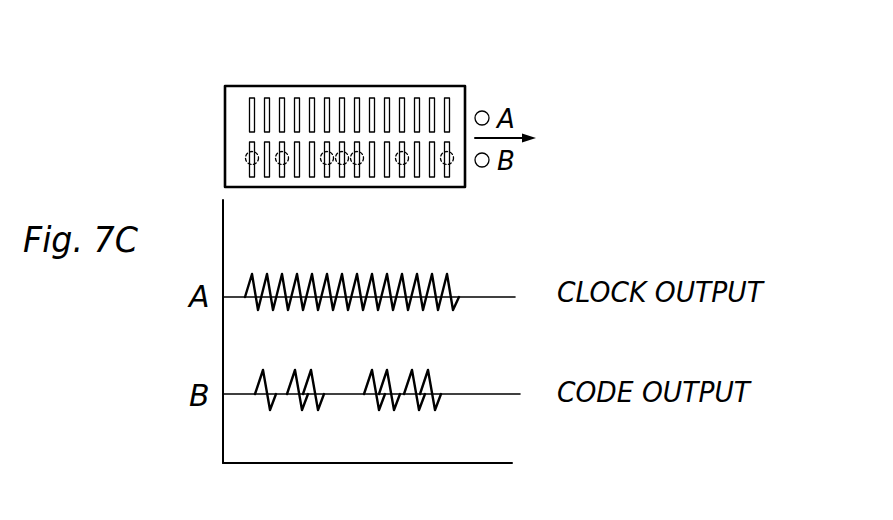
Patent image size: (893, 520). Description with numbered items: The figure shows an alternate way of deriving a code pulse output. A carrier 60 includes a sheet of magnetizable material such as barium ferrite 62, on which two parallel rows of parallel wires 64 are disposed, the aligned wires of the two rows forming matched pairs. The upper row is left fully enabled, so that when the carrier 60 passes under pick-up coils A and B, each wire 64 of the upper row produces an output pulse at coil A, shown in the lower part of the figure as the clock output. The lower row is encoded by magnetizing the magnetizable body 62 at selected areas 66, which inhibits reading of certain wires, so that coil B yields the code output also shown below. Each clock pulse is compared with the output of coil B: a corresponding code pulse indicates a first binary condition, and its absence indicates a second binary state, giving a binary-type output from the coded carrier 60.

The carrier 60 is at (358, 104).
The sheet of magnetizable material 62 is at (456, 106).
The parallel wires 64 is at (252, 106).
The selected areas 66 is at (250, 156).